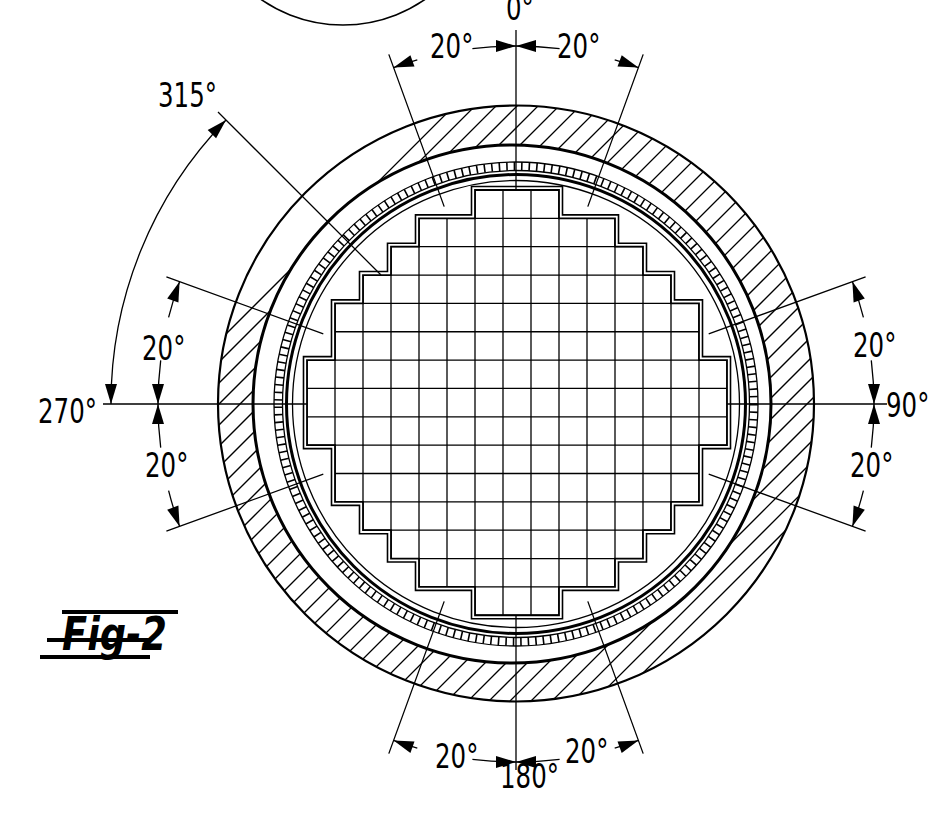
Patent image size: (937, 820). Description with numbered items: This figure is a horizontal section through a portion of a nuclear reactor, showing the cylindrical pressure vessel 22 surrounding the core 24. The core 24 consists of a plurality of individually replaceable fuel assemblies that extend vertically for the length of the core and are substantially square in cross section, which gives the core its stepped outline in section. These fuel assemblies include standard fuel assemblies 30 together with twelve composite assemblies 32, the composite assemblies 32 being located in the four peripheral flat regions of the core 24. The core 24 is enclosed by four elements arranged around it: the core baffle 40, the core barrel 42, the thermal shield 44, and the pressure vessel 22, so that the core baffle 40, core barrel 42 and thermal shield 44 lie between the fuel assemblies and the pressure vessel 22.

The pressure vessel 22 is at (740, 582).
The core 24 is at (660, 225).
The standard fuel assemblies 30 is at (353, 577).
The composite assemblies 32 is at (596, 200).
The core baffle 40 is at (690, 650).
The core barrel 42 is at (670, 592).
The thermal shield 44 is at (690, 578).